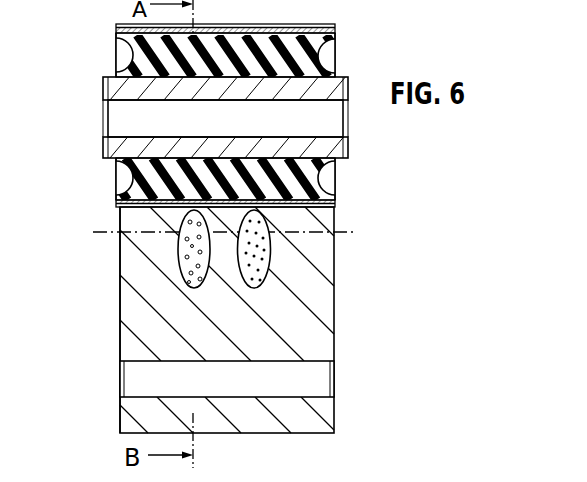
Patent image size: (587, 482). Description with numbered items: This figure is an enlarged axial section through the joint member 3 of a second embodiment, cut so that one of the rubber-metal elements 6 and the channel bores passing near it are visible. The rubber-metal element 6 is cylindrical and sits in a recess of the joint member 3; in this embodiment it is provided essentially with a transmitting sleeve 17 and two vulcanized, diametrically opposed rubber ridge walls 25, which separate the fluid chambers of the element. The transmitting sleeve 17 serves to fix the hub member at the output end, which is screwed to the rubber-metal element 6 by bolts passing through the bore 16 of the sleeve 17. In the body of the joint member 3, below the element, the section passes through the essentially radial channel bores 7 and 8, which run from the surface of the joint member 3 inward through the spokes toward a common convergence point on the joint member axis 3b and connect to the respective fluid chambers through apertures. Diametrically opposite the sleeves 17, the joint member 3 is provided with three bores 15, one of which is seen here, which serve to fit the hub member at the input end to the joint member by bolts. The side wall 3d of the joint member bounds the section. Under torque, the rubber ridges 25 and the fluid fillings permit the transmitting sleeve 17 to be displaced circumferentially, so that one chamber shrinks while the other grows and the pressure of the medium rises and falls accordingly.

The joint member 3 is at (150, 416).
The center axis of housing 3b is at (97, 228).
The side wall of housing 3d is at (120, 335).
The rubber-metal element 6 is at (90, 90).
The channel bore 7 is at (271, 245).
The channel bore 8 is at (178, 258).
The bore 15 is at (133, 384).
The bore of the sleeve 16 is at (120, 118).
The transmitting sleeve 17 is at (112, 145).
The ridge wall 25 is at (117, 48).